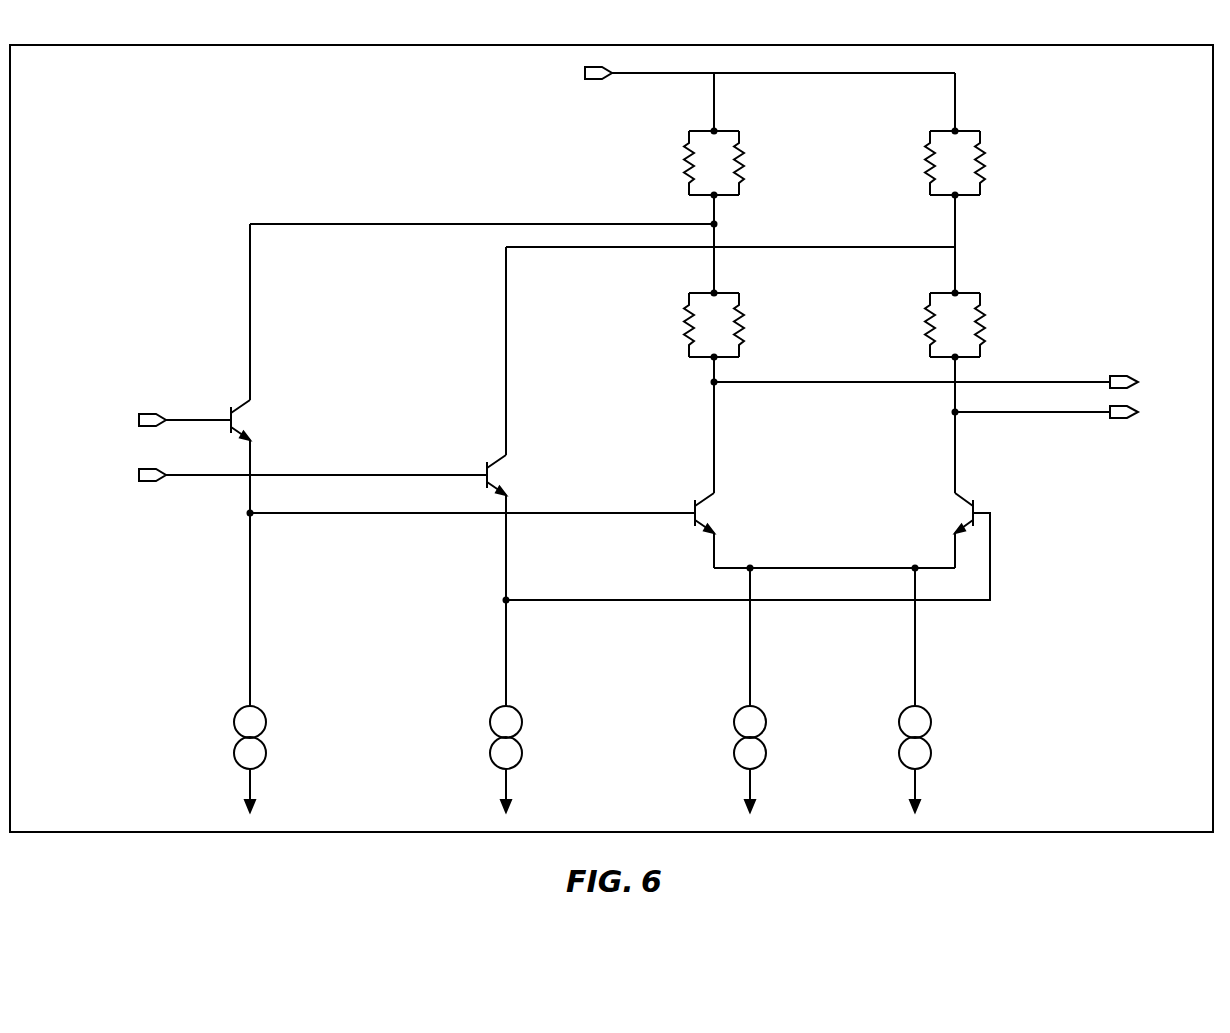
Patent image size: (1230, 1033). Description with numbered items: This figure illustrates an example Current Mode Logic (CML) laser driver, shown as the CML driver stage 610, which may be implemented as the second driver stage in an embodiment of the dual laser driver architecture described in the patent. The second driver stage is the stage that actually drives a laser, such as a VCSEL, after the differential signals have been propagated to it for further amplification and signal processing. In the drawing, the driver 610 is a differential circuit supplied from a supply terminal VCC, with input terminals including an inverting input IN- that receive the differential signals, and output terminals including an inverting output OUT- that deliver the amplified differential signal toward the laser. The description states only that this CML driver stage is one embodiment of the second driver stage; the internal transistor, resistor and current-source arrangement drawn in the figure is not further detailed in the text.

The CML driver stage 610 is at (611, 438).
The supply voltage input port VCC is at (747, 74).
The inverting input port IN- is at (294, 476).
The inverting output port OUT- is at (953, 384).